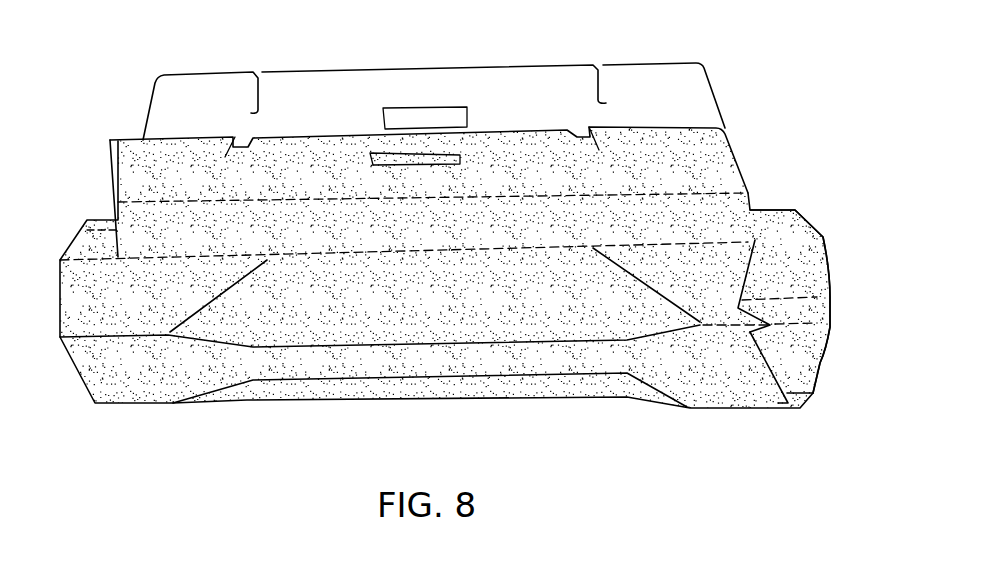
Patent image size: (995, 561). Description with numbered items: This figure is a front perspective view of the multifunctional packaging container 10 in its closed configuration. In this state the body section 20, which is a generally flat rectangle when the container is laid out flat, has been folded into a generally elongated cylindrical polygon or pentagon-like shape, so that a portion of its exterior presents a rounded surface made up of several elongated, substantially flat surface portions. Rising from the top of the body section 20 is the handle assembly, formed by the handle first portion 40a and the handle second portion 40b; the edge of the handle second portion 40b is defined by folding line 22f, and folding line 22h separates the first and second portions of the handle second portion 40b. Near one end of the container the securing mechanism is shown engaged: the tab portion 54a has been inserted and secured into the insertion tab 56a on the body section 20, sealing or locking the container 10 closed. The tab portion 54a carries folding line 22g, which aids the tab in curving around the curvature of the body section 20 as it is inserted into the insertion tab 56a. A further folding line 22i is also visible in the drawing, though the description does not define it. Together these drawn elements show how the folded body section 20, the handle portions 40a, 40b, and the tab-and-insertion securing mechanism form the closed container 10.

The multifunctional packaging container 10 is at (760, 108).
The body section 20 is at (553, 343).
The folding line 22f is at (647, 246).
The folding line 22g is at (810, 293).
The folding line 22h is at (647, 194).
The guide projection 22i is at (813, 325).
The handle first portion 40a is at (160, 117).
The handle second portion 40b is at (133, 187).
The tab portion 54a is at (805, 372).
The insertion tab 56a is at (752, 372).